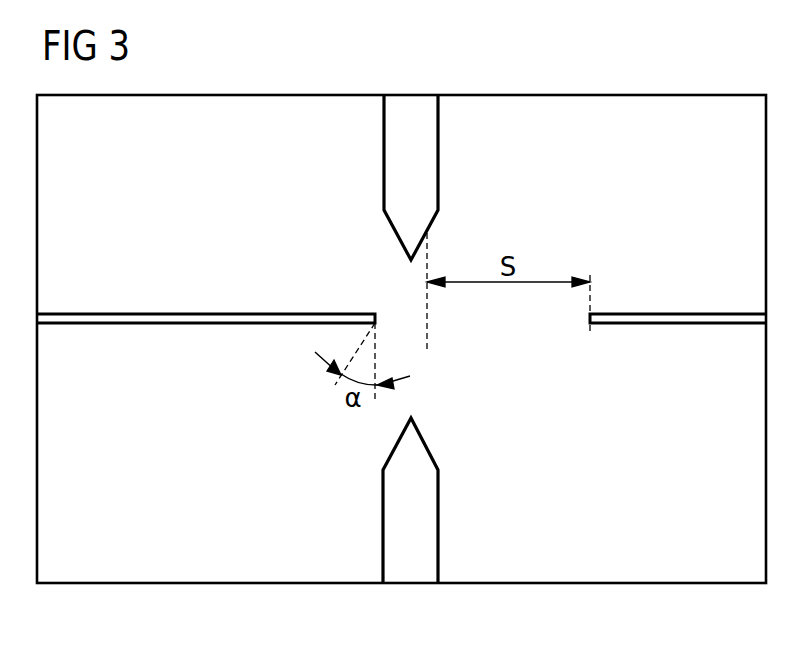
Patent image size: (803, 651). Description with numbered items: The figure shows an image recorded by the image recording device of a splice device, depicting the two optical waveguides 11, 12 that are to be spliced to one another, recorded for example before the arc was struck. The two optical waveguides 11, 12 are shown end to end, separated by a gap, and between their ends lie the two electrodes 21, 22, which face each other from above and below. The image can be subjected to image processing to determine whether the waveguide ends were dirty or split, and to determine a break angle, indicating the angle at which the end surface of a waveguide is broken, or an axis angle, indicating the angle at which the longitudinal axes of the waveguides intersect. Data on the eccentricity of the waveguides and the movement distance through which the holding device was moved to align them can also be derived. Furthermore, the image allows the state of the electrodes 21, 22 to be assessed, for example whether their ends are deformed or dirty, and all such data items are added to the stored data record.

The optical waveguide 11 is at (206, 312).
The optical waveguide 12 is at (679, 312).
The electrode 21 is at (438, 160).
The electrode 22 is at (438, 510).